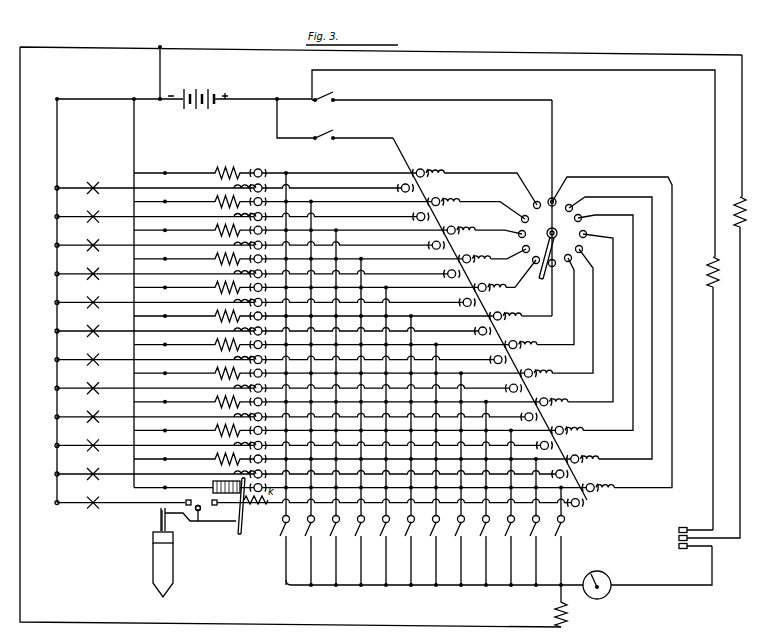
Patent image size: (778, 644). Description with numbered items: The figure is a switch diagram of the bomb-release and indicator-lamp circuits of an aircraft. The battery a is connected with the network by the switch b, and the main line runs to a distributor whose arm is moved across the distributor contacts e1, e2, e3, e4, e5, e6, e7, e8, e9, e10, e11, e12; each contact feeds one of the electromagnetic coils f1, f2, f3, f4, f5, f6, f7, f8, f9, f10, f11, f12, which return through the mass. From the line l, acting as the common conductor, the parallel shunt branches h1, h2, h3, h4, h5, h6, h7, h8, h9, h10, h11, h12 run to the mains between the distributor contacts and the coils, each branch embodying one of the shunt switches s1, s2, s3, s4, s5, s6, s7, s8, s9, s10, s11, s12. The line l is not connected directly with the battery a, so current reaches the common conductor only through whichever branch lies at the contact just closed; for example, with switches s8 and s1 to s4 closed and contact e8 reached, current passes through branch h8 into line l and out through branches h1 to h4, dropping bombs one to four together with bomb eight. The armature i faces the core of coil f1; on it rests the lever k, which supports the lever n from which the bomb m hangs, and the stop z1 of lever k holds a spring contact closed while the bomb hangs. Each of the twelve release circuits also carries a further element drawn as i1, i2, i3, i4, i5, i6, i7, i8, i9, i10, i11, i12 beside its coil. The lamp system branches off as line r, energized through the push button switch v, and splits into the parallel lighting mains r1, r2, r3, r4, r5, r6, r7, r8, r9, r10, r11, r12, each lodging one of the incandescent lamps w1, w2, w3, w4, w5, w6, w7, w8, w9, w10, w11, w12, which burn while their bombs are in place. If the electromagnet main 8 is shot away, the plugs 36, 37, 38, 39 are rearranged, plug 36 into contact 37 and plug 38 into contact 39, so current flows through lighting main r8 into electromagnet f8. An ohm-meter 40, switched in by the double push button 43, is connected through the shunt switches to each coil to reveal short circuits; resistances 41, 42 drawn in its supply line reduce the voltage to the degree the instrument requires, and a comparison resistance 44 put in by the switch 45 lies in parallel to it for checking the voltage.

The battery a is at (206, 86).
The switch b is at (337, 98).
The push button switch v is at (338, 135).
The line r is at (406, 161).
The incandescent lamp w1 is at (97, 502).
The incandescent lamp w2 is at (97, 473).
The incandescent lamp w3 is at (97, 444).
The incandescent lamp w4 is at (97, 416).
The incandescent lamp w5 is at (97, 387).
The incandescent lamp w6 is at (97, 359).
The incandescent lamp w7 is at (97, 330).
The incandescent lamp w8 is at (97, 301).
The incandescent lamp w9 is at (97, 273).
The incandescent lamp w10 is at (97, 244).
The incandescent lamp w11 is at (97, 216).
The incandescent lamp w12 is at (97, 187).
The electromagnetic coil f1 is at (211, 486).
The electromagnetic coil f2 is at (214, 464).
The electromagnetic coil f3 is at (214, 435).
The electromagnetic coil f4 is at (214, 407).
The electromagnetic coil f5 is at (214, 378).
The electromagnetic coil f6 is at (214, 350).
The electromagnetic coil f7 is at (214, 321).
The electromagnetic coil f8 is at (214, 292).
The electromagnetic coil f9 is at (214, 264).
The electromagnetic coil f10 is at (214, 235).
The electromagnetic coil f11 is at (214, 207).
The electromagnetic coil f12 is at (214, 178).
The relay contact i1 is at (186, 501).
The relay coil i2 is at (182, 476).
The relay coil i3 is at (182, 447).
The relay coil i4 is at (182, 419).
The relay coil i5 is at (182, 390).
The relay coil i6 is at (182, 362).
The relay coil i7 is at (182, 333).
The relay coil i8 is at (182, 304).
The relay coil i9 is at (182, 276).
The relay coil i10 is at (182, 247).
The relay coil i11 is at (182, 219).
The relay coil i12 is at (182, 190).
The lighting main r1 is at (577, 508).
The lighting main r2 is at (415, 470).
The lighting main r3 is at (407, 441).
The lighting main r4 is at (399, 413).
The lighting main r5 is at (392, 384).
The lighting main r6 is at (384, 356).
The lighting main r7 is at (376, 327).
The lighting main r8 is at (368, 298).
The lighting main r9 is at (361, 270).
The lighting main r10 is at (353, 241).
The lighting main r11 is at (345, 213).
The lighting main r12 is at (337, 184).
The distributor contact e1 is at (467, 334).
The distributor contact e2 is at (457, 330).
The distributor contact e3 is at (447, 325).
The distributor contact e4 is at (437, 318).
The distributor contact e5 is at (427, 312).
The distributor contact e6 is at (418, 302).
The distributor contact e7 is at (409, 290).
The distributor contact e8 is at (401, 274).
The distributor contact e9 is at (396, 251).
The distributor contact e10 is at (394, 226).
The distributor contact e11 is at (395, 206).
The distributor contact e12 is at (402, 189).
The shunt branch h1 is at (568, 502).
The shunt branch h2 is at (543, 487).
The shunt branch h3 is at (518, 473).
The shunt branch h4 is at (493, 459).
The shunt branch h5 is at (468, 444).
The shunt branch h6 is at (443, 430).
The shunt branch h7 is at (418, 416).
The shunt branch h8 is at (393, 401).
The shunt branch h9 is at (368, 387).
The shunt branch h10 is at (345, 373).
The shunt branch h11 is at (320, 359).
The shunt branch h12 is at (295, 344).
The shunt switch s1 is at (557, 533).
The shunt switch s2 is at (532, 533).
The shunt switch s3 is at (507, 533).
The shunt switch s4 is at (482, 533).
The shunt switch s5 is at (457, 533).
The shunt switch s6 is at (432, 533).
The shunt switch s7 is at (407, 533).
The shunt switch s8 is at (382, 533).
The shunt switch s9 is at (357, 533).
The shunt switch s10 is at (332, 533).
The shunt switch s11 is at (307, 533).
The shunt switch s12 is at (282, 533).
The lever k is at (200, 524).
The stop z1 is at (188, 508).
The armature i is at (243, 521).
The lever n is at (158, 515).
The bomb m is at (152, 571).
The line l is at (424, 588).
The ohm-meter 40 is at (609, 578).
The resistor 41 is at (712, 263).
The resistor 42 is at (740, 200).
The double push button 43 is at (679, 531).
The comparison resistance 44 is at (576, 625).
The switch 45 is at (559, 599).
The electromagnet main 8 is at (447, 293).
The plug 36 is at (494, 290).
The plug contact 37 is at (466, 303).
The plug 38 is at (264, 290).
The plug contact 39 is at (264, 277).